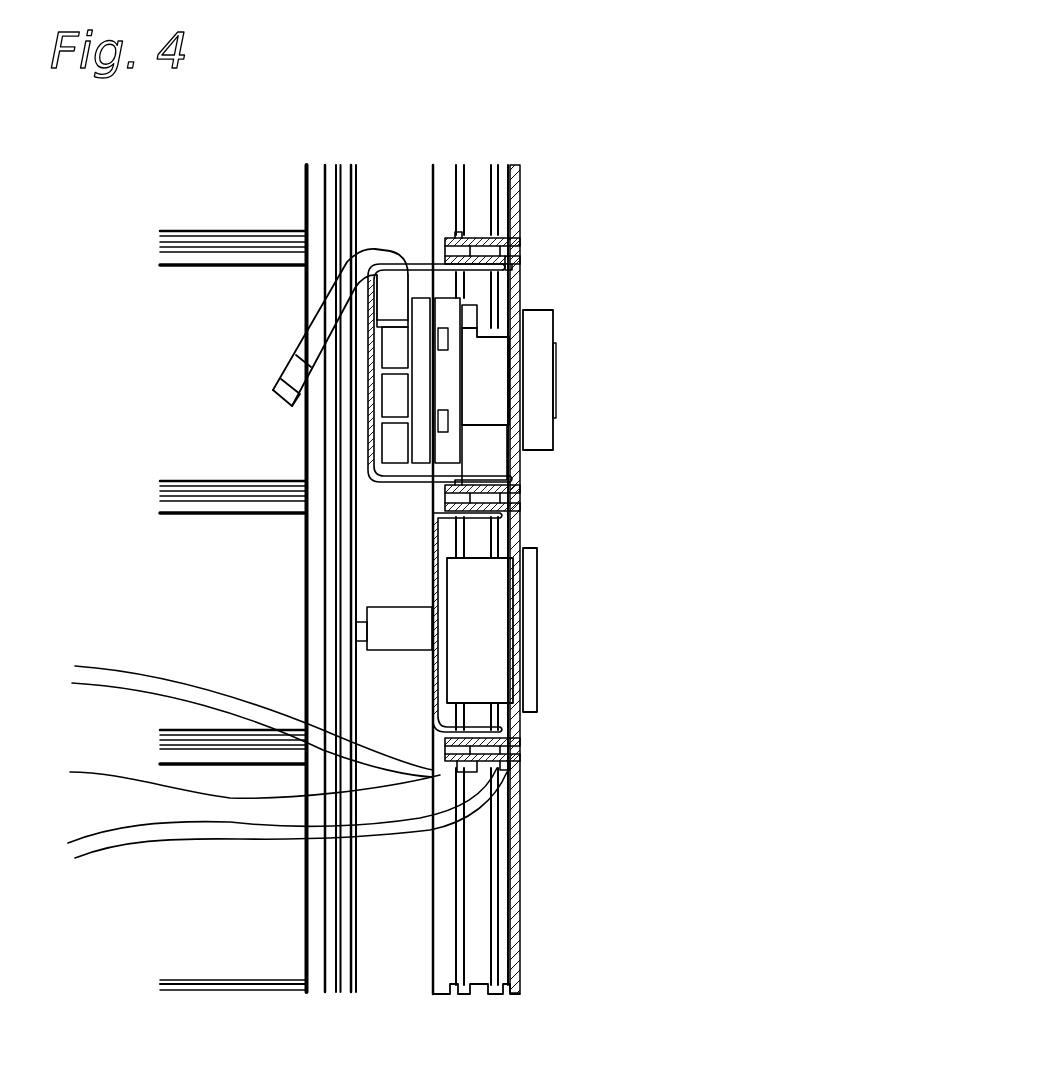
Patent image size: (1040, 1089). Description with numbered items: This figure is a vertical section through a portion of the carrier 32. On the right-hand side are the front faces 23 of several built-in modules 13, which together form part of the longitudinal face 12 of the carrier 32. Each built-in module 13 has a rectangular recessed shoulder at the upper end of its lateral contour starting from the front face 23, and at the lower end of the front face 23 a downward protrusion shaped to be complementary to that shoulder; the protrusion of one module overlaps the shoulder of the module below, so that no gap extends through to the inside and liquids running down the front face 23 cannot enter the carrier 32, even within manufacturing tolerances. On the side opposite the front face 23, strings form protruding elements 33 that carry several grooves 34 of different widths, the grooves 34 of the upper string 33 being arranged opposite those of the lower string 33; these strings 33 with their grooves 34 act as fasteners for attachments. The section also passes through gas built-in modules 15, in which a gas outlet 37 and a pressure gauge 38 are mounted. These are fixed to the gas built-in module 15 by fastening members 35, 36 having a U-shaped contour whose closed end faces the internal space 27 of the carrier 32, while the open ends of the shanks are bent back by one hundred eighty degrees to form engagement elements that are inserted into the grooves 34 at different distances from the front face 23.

The longitudinal face 12 is at (523, 970).
The built-in module 13 is at (525, 856).
The gas built-in module 15 is at (523, 297).
The front face 23 is at (523, 233).
The internal space 27 is at (82, 305).
The carrier 32 is at (567, 115).
The protruding element (string) 33 is at (220, 780).
The groove 34 is at (253, 770).
The fastening member 35 is at (378, 493).
The fastening member 36 is at (434, 543).
The gas outlet 37 is at (490, 385).
The pressure gauge 38 is at (490, 667).